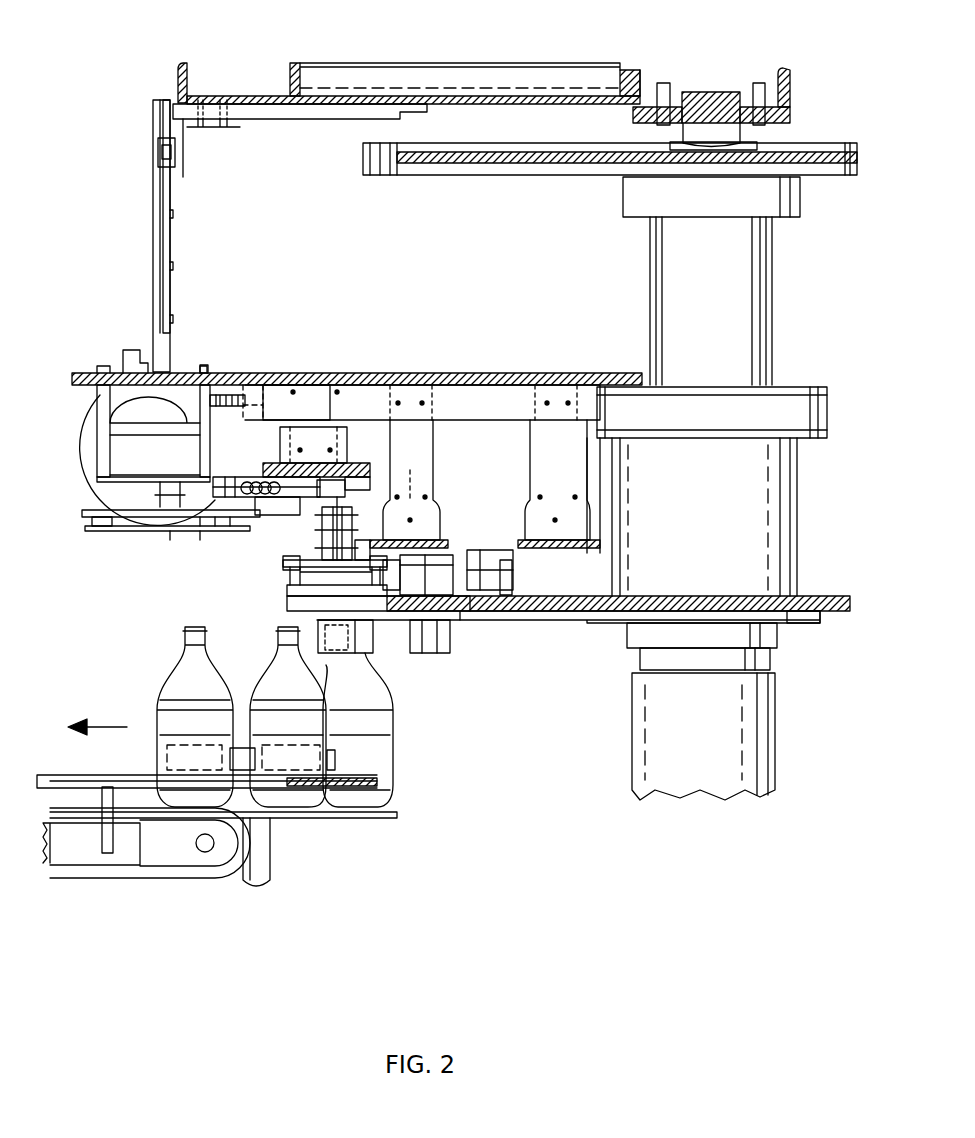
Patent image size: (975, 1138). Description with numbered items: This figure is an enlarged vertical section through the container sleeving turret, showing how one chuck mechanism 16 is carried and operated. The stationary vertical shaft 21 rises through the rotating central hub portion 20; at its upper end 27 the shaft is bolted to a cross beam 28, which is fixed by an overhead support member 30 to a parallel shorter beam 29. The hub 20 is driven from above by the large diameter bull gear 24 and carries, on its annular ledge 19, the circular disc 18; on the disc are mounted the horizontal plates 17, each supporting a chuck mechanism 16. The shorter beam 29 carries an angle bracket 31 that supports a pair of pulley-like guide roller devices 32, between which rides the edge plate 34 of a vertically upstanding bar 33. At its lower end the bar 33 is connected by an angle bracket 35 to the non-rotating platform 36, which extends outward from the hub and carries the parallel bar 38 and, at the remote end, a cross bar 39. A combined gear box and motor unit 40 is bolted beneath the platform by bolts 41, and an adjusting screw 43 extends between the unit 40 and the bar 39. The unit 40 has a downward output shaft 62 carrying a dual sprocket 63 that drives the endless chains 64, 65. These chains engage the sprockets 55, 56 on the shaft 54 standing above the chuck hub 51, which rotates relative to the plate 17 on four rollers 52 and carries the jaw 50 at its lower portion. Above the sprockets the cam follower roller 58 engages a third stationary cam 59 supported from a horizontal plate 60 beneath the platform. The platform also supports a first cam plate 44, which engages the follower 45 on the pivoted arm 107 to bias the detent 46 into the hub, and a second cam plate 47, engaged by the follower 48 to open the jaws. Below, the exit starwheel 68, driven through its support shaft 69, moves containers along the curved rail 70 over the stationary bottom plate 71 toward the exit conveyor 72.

The chuck mechanism 16 is at (272, 584).
The horizontal plate 17 is at (505, 603).
The circular plate or disc 18 is at (552, 620).
The annular ledge 19 is at (800, 623).
The central hub portion 20 is at (797, 515).
The vertical shaft 21 is at (632, 760).
The bull gear 24 is at (470, 175).
The upper end of shaft 27 is at (730, 92).
The cross beam 28 is at (790, 90).
The shorter beam 29 is at (187, 73).
The overhead support member 30 is at (490, 75).
The angle bracket 31 is at (187, 135).
The guide roller devices 32 is at (158, 150).
The vertically upstanding bar 33 is at (153, 287).
The edge plate 34 is at (172, 295).
The angle bracket 35 is at (135, 355).
The drive motor and cam plate supporting platform 36 is at (335, 373).
The parallel bar 38 is at (493, 415).
The cross bar 39 is at (255, 385).
The combined gear box and motor unit 40 is at (88, 440).
The bolts 41 is at (220, 352).
The adjusting screw 43 is at (230, 406).
The first cam plate 44 is at (593, 543).
The follower 45 is at (510, 548).
The detent 46 is at (385, 620).
The second cam plate 47 is at (448, 545).
The follower 48 is at (342, 545).
The jaw 50 is at (450, 648).
The hub 51 is at (287, 593).
The rollers 52 is at (283, 563).
The shaft 54 is at (322, 540).
The sprocket 55 is at (370, 545).
The sprocket 56 is at (300, 580).
The cam follower roller 58 is at (335, 480).
The third stationary cam 59 is at (320, 463).
The horizontal plate 60 is at (280, 463).
The output shaft 62 is at (170, 510).
The dual sprocket 63 is at (105, 531).
The endless chain 64 is at (82, 512).
The endless chain 65 is at (85, 528).
The starwheel 68 is at (340, 765).
The support shaft 69 is at (270, 848).
The curved rail 70 is at (377, 785).
The bottom plate 71 is at (305, 818).
The exit conveyor 72 is at (143, 815).
The arm 107 is at (512, 568).